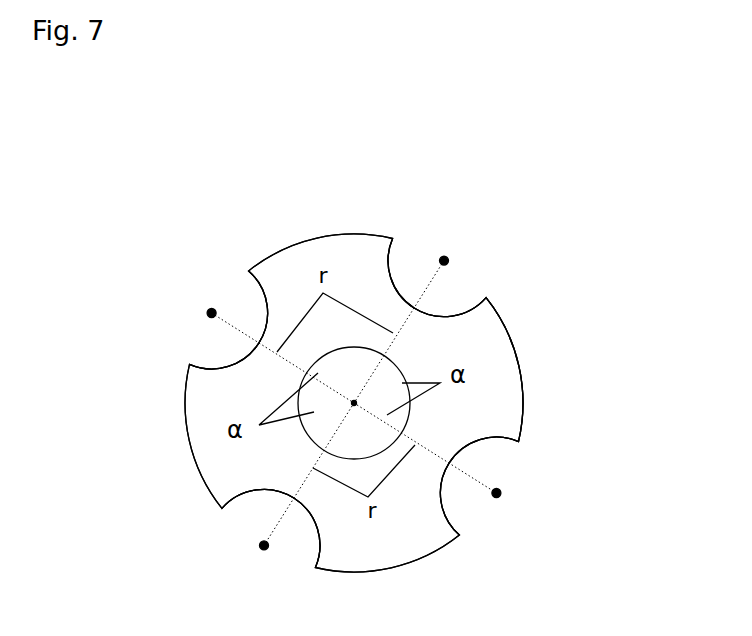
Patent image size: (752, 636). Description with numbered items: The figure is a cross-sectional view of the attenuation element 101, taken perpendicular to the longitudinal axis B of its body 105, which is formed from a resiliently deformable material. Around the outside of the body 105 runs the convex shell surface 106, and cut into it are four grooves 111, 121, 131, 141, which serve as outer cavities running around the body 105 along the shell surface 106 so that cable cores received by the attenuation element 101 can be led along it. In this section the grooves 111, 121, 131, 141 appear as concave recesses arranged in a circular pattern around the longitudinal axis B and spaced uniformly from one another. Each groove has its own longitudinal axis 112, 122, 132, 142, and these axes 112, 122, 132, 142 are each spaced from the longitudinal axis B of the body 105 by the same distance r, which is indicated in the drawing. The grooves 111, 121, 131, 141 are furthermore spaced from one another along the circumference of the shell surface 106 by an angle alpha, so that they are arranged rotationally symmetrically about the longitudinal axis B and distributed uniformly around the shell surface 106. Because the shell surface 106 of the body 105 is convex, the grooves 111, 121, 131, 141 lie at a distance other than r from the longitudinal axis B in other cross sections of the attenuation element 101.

The attenuation element 101 is at (112, 172).
The body 105 is at (313, 218).
The shell surface 106 is at (515, 340).
The groove 111 is at (458, 312).
The longitudinal axis of groove 112 is at (444, 261).
The groove 121 is at (448, 520).
The longitudinal axis of groove 122 is at (496, 493).
The groove 131 is at (268, 493).
The longitudinal axis of groove 132 is at (264, 545).
The groove 141 is at (220, 363).
The longitudinal axis of groove 142 is at (212, 313).